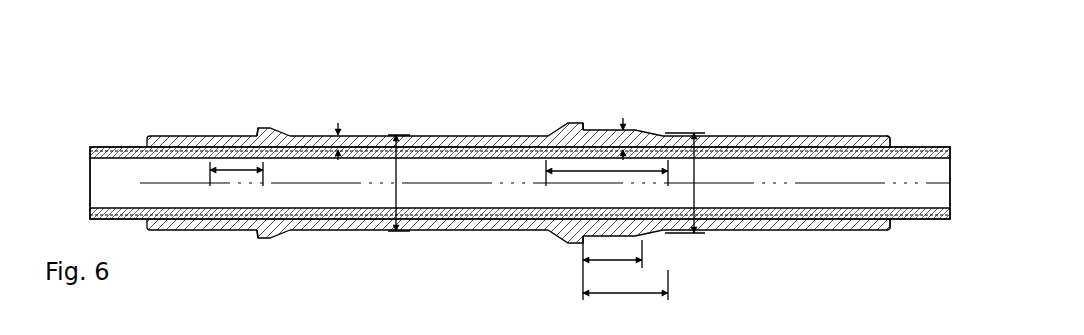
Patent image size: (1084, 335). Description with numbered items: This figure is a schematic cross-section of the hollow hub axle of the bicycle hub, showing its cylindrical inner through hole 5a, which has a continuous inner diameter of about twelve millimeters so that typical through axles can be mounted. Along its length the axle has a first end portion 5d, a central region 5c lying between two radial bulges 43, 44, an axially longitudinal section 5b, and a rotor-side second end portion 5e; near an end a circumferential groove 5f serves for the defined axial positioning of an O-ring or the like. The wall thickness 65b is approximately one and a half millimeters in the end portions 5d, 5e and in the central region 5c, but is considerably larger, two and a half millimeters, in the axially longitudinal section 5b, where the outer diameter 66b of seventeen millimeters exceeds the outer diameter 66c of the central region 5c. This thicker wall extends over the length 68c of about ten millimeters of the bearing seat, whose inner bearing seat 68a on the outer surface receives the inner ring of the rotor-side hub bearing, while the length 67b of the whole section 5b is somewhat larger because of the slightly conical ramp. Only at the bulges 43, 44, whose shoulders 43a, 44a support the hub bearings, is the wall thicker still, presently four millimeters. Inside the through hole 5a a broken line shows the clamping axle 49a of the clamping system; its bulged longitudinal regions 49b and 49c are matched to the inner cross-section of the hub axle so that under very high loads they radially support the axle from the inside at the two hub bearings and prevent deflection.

The inner through hole 5a is at (108, 184).
The axially longitudinal section 5b is at (638, 97).
The central region 5c is at (545, 97).
The first end portion 5d is at (183, 115).
The second end portion 5e is at (785, 113).
The circumferential groove 5f is at (864, 131).
The radial bulge 43 is at (264, 125).
The shoulder 43a is at (257, 134).
The radial bulge 44 is at (575, 108).
The shoulder 44a is at (585, 128).
The clamping axle 49a is at (120, 154).
The longitudinal region 49b is at (574, 172).
The longitudinal region 49c is at (221, 173).
The wall thickness 65b is at (338, 140).
The outer diameter 66b is at (698, 168).
The outer diameter 66c is at (398, 166).
The length 67b is at (600, 295).
The inner bearing seat 68a is at (600, 235).
The length 68c is at (595, 262).